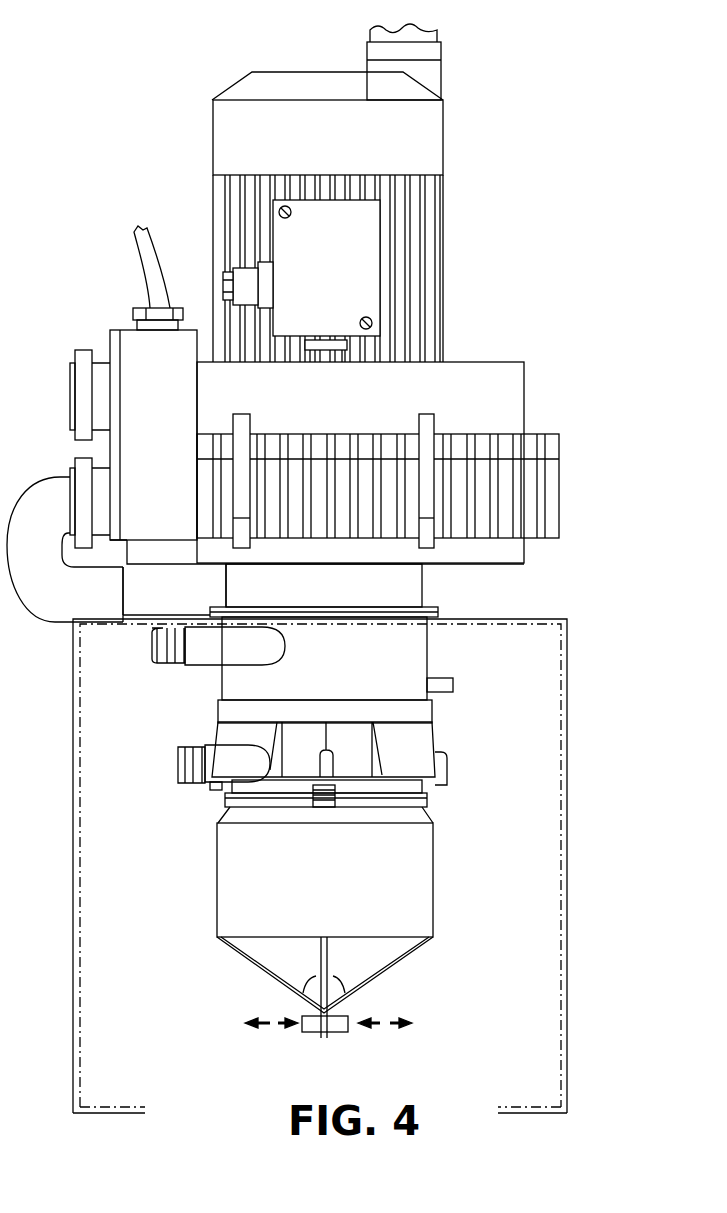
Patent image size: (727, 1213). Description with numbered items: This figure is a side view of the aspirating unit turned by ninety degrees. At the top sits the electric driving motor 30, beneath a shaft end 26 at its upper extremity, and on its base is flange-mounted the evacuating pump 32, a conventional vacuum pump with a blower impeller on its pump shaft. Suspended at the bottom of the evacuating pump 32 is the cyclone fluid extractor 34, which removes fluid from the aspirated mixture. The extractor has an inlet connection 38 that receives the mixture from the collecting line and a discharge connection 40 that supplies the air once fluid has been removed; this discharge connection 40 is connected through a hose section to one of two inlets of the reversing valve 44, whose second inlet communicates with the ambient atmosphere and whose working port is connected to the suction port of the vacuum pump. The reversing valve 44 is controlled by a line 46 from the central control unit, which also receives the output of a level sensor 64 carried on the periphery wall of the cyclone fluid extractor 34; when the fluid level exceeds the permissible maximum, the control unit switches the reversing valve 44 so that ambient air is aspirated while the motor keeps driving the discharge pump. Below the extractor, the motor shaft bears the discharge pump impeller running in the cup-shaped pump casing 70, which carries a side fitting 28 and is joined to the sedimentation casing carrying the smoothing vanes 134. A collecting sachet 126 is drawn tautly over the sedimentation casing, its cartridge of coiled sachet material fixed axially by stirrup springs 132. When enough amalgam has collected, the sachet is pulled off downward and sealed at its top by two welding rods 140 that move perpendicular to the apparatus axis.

The drive shaft 26 is at (425, 26).
The electric driving motor 30 is at (405, 266).
The evacuating pump 32 is at (463, 445).
The cyclone fluid extractor 34 is at (385, 663).
The inlet connection 38 is at (212, 650).
The discharge connection 40 is at (160, 597).
The 3/2 reversing valve 44 is at (142, 368).
The line 46 is at (33, 520).
The level sensor 64 is at (440, 686).
The pump casing 70 is at (405, 748).
The inlet fitting 28 is at (230, 760).
The stirrup springs 132 is at (330, 807).
The collecting sachet 126 is at (398, 968).
The smoothing vanes 134 is at (323, 948).
The welding rods 140 is at (337, 1022).